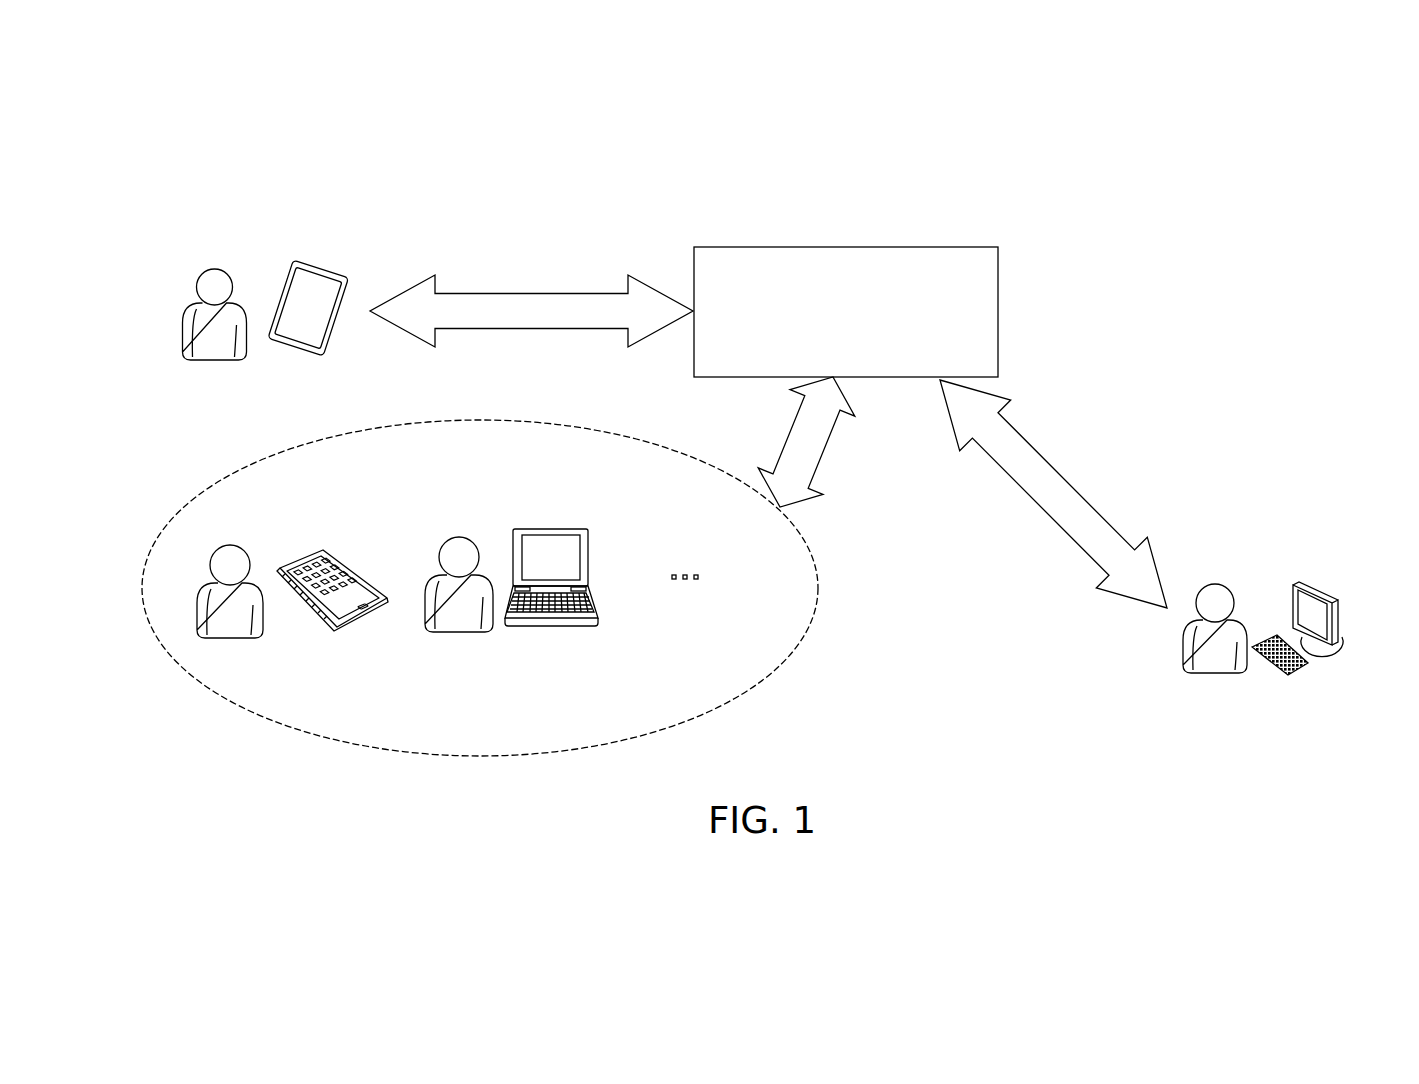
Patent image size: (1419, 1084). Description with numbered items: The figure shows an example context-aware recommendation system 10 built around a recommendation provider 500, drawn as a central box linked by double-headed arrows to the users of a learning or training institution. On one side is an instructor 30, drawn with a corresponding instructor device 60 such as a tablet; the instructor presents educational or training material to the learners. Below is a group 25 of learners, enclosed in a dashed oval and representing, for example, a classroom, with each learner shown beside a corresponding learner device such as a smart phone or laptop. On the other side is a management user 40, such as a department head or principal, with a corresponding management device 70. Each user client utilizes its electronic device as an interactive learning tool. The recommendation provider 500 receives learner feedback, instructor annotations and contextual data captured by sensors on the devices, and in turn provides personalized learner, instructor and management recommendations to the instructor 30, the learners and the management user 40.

The context-aware recommendation system 10 is at (1005, 194).
The group of learners 25 is at (597, 430).
The instructor user client 30 is at (214, 296).
The management user client 40 is at (1215, 612).
The instructor device 60 is at (318, 277).
The management device 70 is at (1313, 595).
The recommendation provider 500 is at (862, 246).